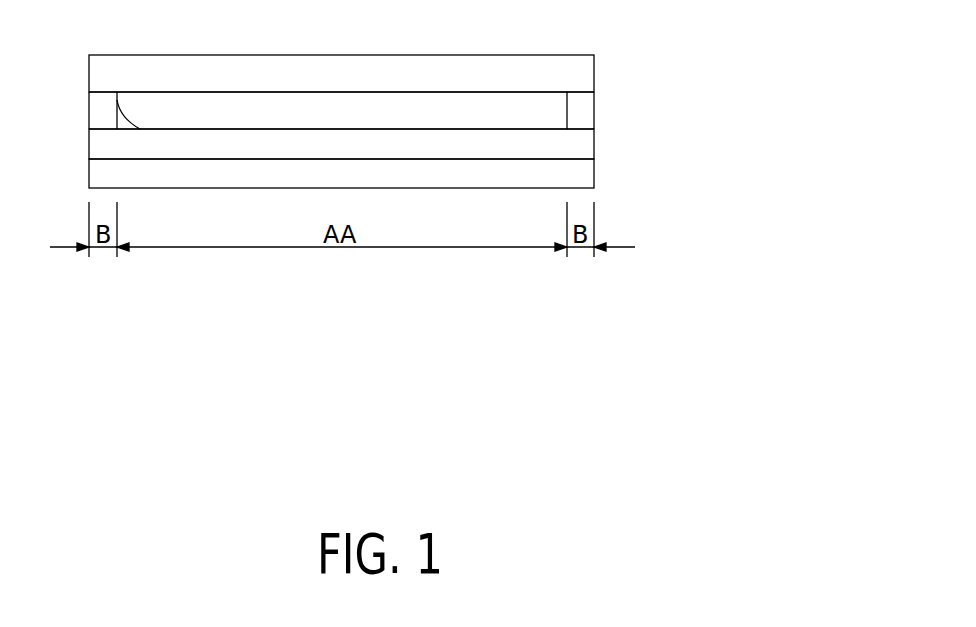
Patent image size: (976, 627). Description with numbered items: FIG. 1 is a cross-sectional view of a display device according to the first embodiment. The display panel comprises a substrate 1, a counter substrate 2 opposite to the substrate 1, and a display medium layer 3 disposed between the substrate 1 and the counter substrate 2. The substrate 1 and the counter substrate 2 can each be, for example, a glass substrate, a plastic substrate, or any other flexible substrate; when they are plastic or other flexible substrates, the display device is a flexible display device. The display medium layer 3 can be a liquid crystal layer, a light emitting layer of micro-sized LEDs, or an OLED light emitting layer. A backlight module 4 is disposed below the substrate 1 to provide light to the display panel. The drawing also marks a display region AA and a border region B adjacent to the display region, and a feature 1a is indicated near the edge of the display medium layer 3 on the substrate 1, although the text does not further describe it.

The substrate 1 is at (594, 144).
The edge of substrate groove 1a is at (116, 108).
The counter substrate 2 is at (594, 73).
The display medium layer 3 is at (553, 113).
The backlight module 4 is at (594, 174).